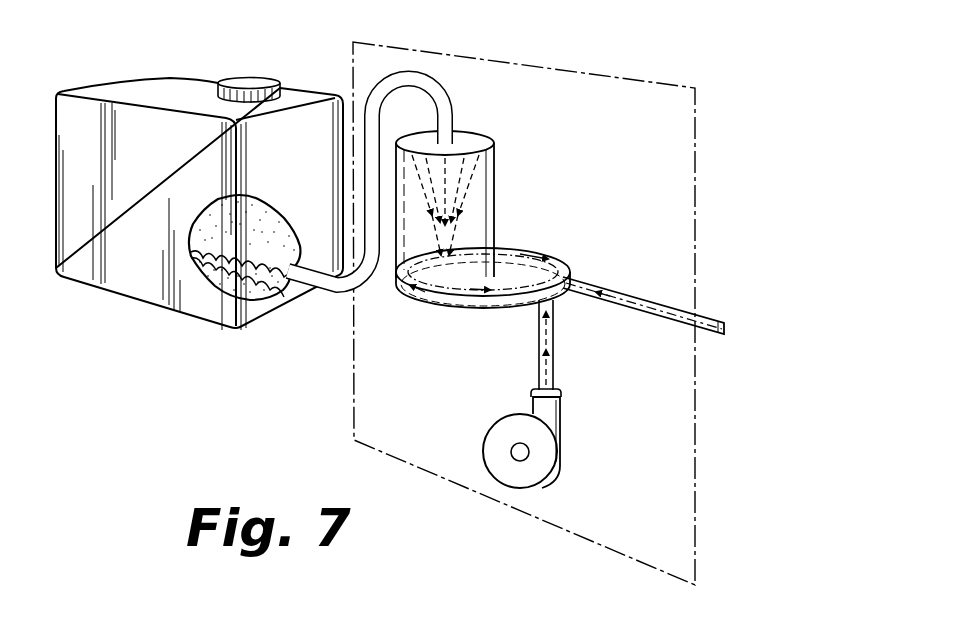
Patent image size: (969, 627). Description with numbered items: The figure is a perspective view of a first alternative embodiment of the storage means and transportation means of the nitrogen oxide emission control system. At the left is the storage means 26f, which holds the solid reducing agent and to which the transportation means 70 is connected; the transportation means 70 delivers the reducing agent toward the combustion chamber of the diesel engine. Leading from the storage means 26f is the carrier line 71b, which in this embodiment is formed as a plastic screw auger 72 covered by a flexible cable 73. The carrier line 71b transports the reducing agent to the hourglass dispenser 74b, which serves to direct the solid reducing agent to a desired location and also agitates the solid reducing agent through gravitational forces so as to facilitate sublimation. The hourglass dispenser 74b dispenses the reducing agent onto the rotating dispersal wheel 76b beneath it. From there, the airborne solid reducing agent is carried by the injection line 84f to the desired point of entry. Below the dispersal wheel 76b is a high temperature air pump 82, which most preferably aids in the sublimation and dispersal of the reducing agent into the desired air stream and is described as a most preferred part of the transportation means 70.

The transportation means 70 is at (628, 70).
The storage means 26f is at (82, 238).
The plastic screw auger 72 is at (233, 273).
The flexible cable 73 is at (313, 283).
The carrier line 71b is at (452, 100).
The hourglass dispenser 74b is at (495, 190).
The rotating dispersal wheel 76b is at (467, 308).
The injection line 84f is at (705, 318).
The high temperature air pump 82 is at (545, 463).